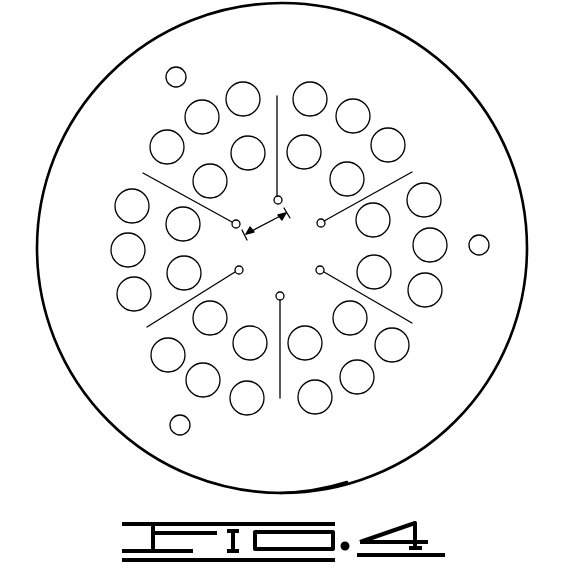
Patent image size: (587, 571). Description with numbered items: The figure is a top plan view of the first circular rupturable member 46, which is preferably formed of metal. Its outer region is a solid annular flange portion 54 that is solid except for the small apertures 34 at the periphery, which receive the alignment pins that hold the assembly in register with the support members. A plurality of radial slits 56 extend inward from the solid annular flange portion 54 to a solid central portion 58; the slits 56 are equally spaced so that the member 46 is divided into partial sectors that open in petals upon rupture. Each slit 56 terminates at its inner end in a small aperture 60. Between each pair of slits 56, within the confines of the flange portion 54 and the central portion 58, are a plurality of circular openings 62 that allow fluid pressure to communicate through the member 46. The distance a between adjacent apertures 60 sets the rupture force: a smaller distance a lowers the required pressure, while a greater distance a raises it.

The apertures 34 is at (183, 69).
The first circular rupturable member 46 is at (413, 67).
The solid annular flange portion 54 is at (322, 411).
The radial slits 56 is at (279, 184).
The solid central portion 58 is at (294, 279).
The small aperture 60 is at (283, 201).
The circular openings 62 is at (370, 107).
The distance a is at (270, 229).